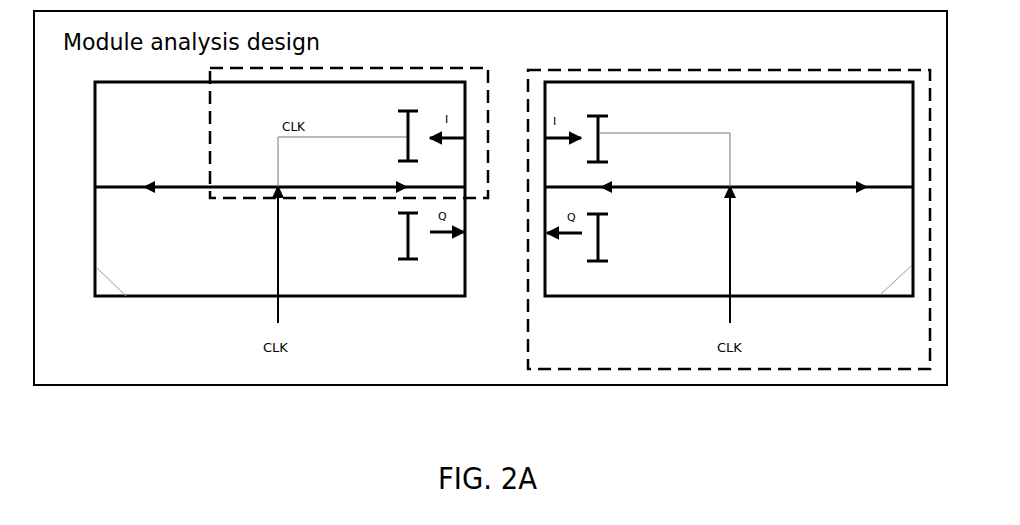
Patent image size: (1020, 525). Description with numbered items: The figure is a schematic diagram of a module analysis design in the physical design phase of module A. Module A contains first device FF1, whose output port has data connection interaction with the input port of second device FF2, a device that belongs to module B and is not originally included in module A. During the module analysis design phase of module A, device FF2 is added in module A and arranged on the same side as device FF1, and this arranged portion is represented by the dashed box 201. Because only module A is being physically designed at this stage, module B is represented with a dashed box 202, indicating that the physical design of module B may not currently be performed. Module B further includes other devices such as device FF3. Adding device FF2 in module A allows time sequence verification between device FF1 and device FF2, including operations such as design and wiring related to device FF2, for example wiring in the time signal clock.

The dashed box 201 is at (400, 68).
The dashed box 202 is at (808, 68).
The module A is at (280, 189).
The module B is at (729, 189).
The first device FF1 is at (406, 250).
The second device FF2 is at (502, 127).
The device FF3 is at (596, 251).